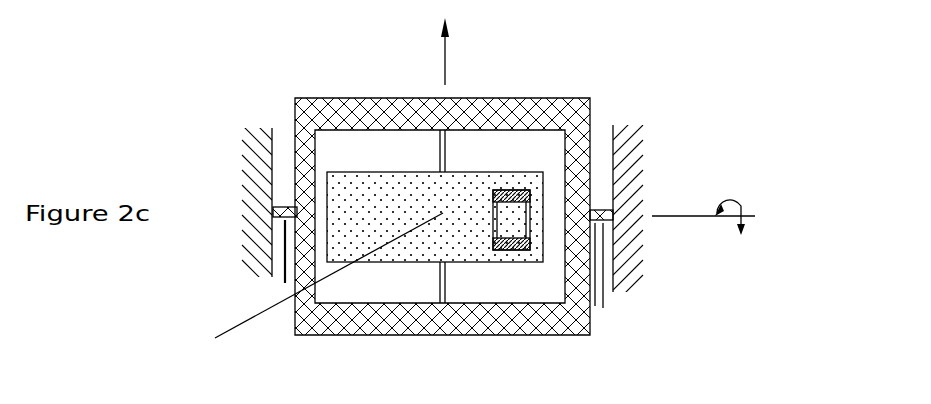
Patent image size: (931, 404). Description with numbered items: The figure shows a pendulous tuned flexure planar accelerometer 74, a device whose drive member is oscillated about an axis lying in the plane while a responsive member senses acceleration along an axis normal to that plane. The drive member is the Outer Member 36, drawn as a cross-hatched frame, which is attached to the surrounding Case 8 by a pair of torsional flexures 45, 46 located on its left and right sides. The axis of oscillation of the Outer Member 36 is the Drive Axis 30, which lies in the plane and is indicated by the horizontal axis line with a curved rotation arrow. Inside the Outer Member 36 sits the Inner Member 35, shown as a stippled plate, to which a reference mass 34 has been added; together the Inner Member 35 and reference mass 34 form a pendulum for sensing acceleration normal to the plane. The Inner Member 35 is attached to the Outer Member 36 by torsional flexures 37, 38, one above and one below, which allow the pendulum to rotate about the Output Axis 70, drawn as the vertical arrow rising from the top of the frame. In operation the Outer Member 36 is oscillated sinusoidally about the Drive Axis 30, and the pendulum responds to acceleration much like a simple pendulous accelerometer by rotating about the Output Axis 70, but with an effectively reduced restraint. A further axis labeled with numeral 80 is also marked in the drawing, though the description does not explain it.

The Case 8 is at (242, 203).
The Drive Axis 30 is at (682, 210).
The reference mass 34 is at (619, 137).
The Inner Member 35 is at (367, 180).
The Outer Member 36 is at (518, 192).
The torsional flexure 37 is at (445, 152).
The torsional flexure 38 is at (448, 285).
The torsional flexure 45 is at (603, 308).
The torsional flexure 46 is at (285, 283).
The Output Axis 70 is at (430, 47).
The pendulous TFA accelerometer 74 is at (743, 52).
The accelerometer axis AA 80 is at (242, 342).